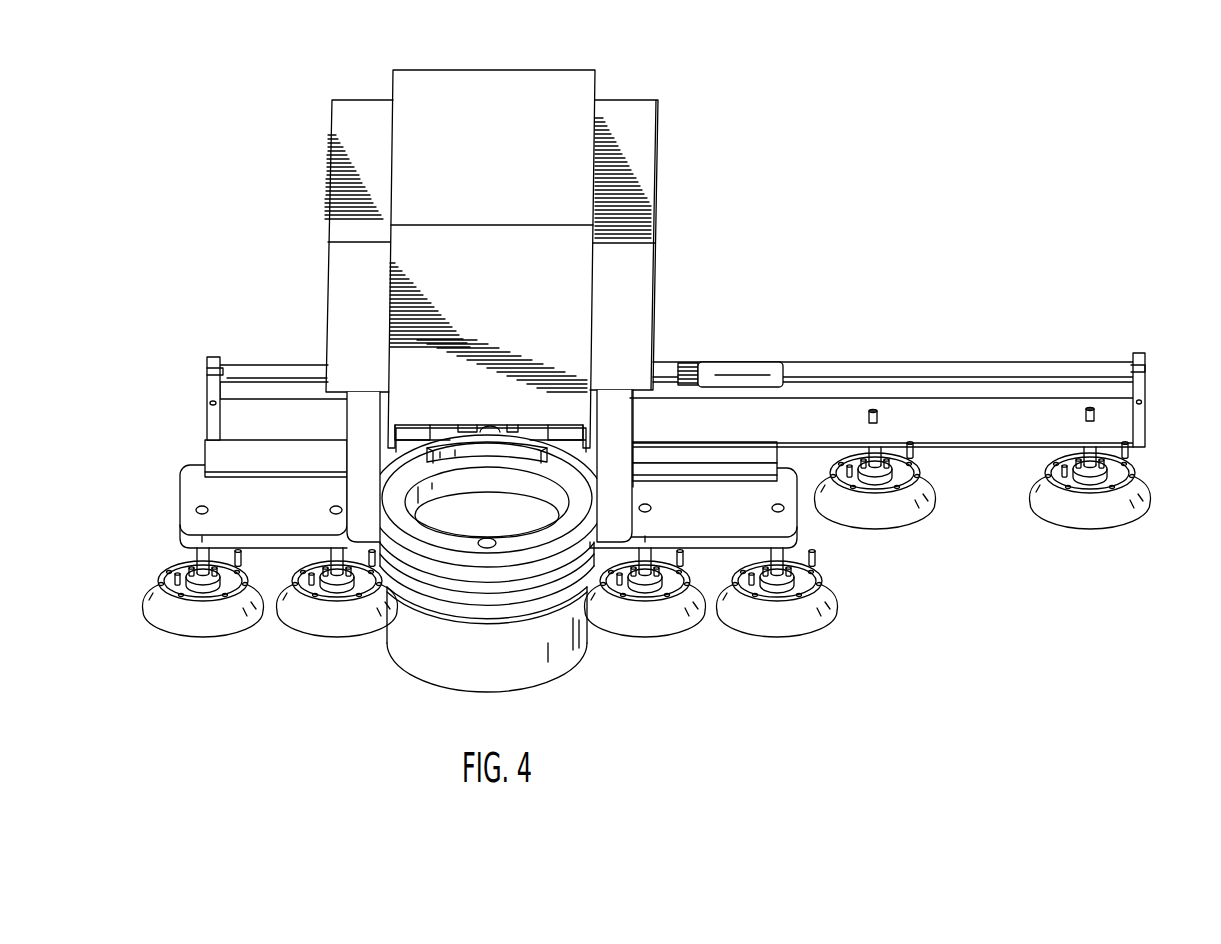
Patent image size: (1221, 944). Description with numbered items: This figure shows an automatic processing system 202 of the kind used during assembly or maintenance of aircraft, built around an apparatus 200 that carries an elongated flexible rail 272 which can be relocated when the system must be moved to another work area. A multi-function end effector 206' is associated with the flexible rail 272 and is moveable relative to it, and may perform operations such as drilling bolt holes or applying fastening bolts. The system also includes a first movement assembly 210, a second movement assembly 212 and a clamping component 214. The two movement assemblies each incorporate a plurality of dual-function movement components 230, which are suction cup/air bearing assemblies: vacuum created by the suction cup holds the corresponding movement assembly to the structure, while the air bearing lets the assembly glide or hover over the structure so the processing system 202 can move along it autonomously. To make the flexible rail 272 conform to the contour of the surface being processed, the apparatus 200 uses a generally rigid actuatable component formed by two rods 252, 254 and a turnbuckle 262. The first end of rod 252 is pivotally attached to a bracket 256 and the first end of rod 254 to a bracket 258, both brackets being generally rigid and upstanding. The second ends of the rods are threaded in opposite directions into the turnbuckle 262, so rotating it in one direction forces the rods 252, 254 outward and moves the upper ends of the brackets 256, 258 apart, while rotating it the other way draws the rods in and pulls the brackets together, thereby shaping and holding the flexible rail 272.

The apparatus 200 is at (914, 424).
The processing system 202 is at (277, 193).
The multi-function end effector 206' is at (667, 245).
The first movement assembly 210 is at (193, 527).
The second movement assembly 212 is at (432, 589).
The clamping component 214 is at (558, 652).
The dual-function movement component 230 is at (185, 617).
The rod 252 is at (1007, 370).
The rod 254 is at (278, 372).
The bracket 256 is at (1138, 428).
The bracket 258 is at (208, 417).
The turnbuckle 262 is at (732, 368).
The flexible rail 272 is at (979, 434).